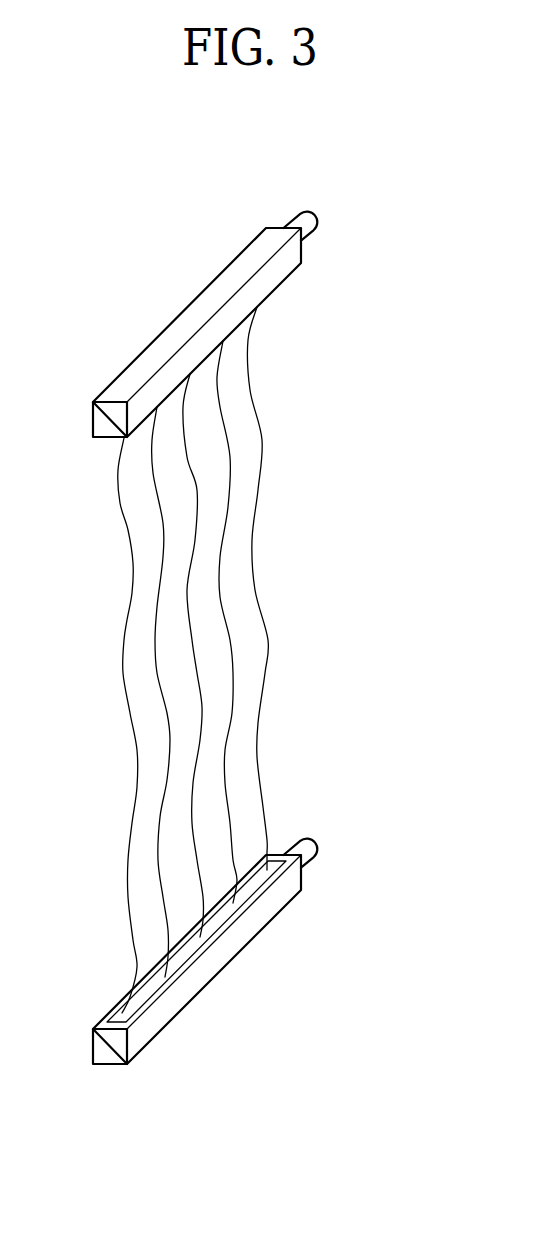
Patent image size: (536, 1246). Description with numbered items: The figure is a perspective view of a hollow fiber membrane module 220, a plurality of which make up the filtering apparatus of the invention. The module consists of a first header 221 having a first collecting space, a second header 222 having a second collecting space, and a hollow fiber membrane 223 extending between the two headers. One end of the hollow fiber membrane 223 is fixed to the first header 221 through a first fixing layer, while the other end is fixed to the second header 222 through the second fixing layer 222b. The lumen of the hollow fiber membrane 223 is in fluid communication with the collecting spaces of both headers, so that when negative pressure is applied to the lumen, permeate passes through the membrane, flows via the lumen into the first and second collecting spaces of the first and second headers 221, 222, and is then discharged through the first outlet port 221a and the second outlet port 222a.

The hollow fiber membrane module 220 is at (374, 349).
The first header 221 is at (235, 293).
The first outlet port 221a is at (306, 224).
The second header 222 is at (213, 919).
The second outlet port 222a is at (308, 849).
The second fixing layer 222b is at (120, 1017).
The hollow fiber membrane 223 is at (263, 431).